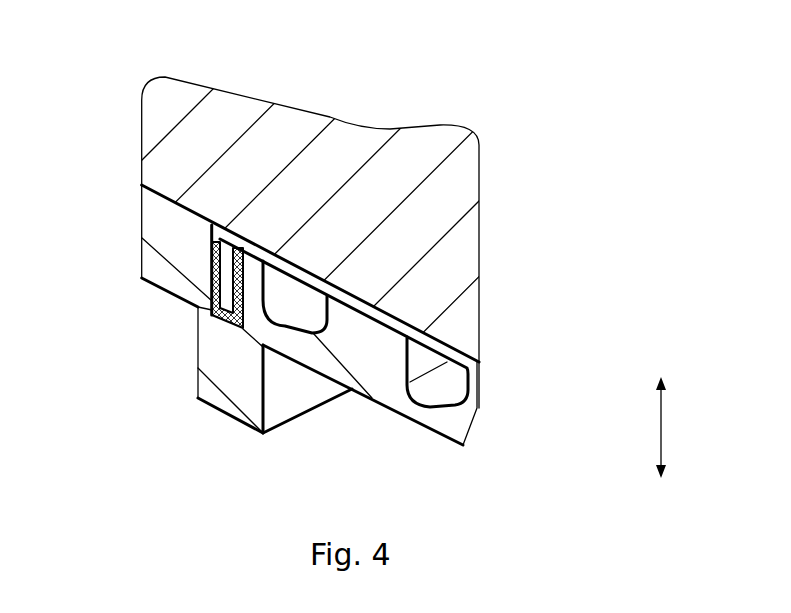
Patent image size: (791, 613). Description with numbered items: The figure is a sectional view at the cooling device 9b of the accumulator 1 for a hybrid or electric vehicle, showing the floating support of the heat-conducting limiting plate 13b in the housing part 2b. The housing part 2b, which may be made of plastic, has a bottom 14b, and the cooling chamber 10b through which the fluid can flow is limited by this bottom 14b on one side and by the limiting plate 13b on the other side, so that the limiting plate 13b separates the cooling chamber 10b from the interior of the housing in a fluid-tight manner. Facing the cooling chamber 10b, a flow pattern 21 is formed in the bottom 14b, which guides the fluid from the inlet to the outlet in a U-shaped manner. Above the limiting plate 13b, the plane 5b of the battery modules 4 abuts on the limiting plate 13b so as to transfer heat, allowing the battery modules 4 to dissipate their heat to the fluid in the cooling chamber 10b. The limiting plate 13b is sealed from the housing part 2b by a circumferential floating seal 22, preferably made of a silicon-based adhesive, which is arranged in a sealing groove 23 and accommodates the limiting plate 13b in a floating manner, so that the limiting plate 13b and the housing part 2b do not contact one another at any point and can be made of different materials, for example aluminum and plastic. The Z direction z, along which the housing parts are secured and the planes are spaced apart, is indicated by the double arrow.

The accumulator 1 is at (560, 143).
The battery module 4 is at (470, 253).
The plane 5b is at (503, 210).
The limiting plate 13b is at (212, 262).
The floating seal 22 is at (212, 287).
The sealing groove 23 is at (198, 307).
The cooling chamber 10b is at (300, 310).
The housing part 2b is at (397, 393).
The bottom 14b is at (370, 405).
The cooling device 9b is at (500, 391).
The flow pattern 21 is at (467, 404).
The Z direction z is at (663, 427).